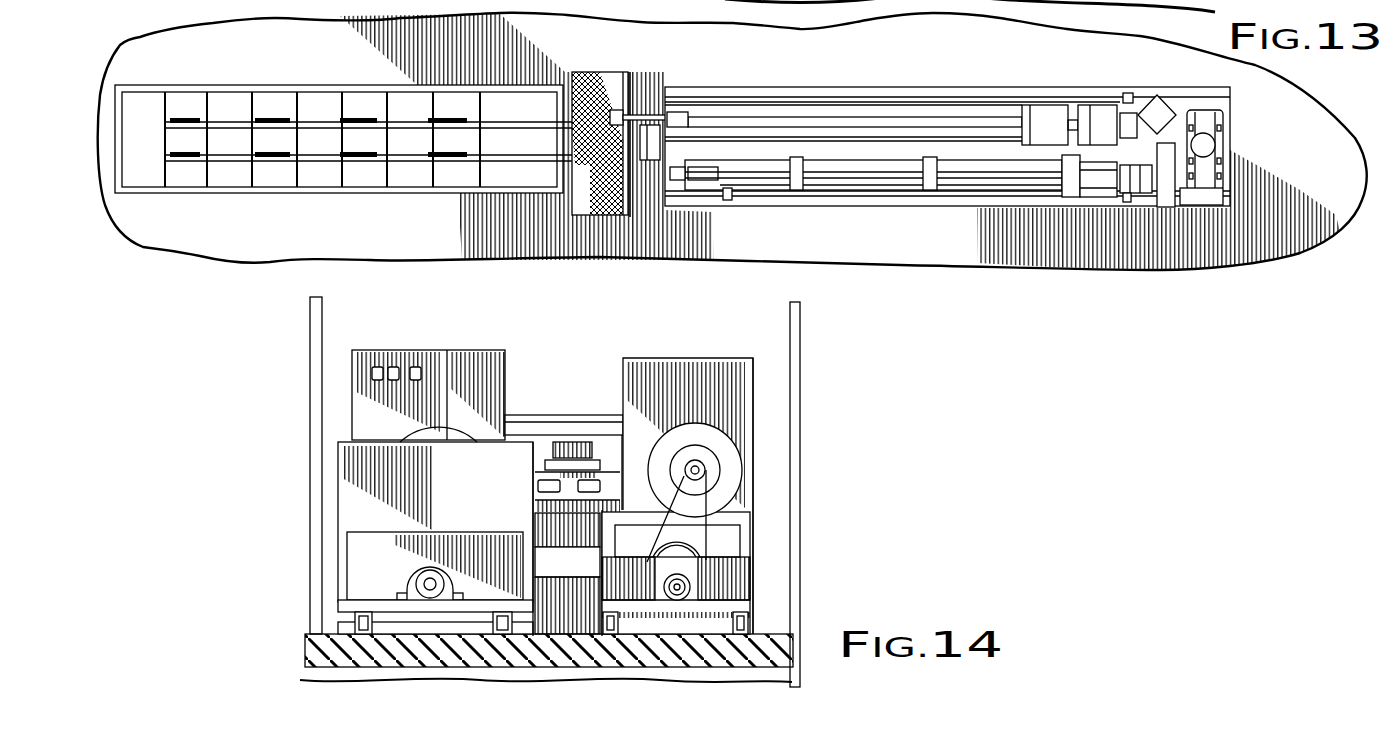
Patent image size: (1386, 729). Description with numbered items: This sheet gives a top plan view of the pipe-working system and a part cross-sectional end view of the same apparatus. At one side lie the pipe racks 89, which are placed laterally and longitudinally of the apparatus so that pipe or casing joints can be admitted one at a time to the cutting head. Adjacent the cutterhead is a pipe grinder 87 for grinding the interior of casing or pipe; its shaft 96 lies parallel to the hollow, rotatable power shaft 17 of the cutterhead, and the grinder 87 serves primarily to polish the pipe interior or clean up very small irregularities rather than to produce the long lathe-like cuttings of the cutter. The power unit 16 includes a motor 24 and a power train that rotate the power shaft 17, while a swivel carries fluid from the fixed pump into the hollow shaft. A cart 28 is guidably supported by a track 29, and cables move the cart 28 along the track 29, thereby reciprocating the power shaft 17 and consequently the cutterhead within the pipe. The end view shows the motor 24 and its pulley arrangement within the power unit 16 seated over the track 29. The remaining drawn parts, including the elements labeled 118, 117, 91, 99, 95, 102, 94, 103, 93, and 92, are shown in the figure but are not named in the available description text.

In FIG. 13, the pipe racks 89 is at (386, 78).
In FIG. 13, the pipe grinder 87 is at (600, 72).
In FIG. 13, the coupling 118 is at (614, 102).
In FIG. 13, the bracket 117 is at (641, 108).
In FIG. 13, the guide rail 91 is at (788, 88).
In FIG. 13, the grinder shaft 96 is at (850, 118).
In FIG. 14, the grinder shaft 96 is at (445, 575).
In FIG. 13, the motor 99 is at (1053, 108).
In FIG. 13, the gear box 95 is at (1118, 112).
In FIG. 14, the gear box 95 is at (447, 437).
In FIG. 13, the control box 102 is at (1150, 110).
In FIG. 14, the control box 102 is at (418, 322).
In FIG. 13, the carriage 94 is at (1242, 140).
In FIG. 14, the carriage 94 is at (603, 408).
In FIG. 13, the housing 103 is at (1170, 200).
In FIG. 14, the housing 103 is at (730, 358).
In FIG. 13, the power unit 16 is at (1150, 204).
In FIG. 14, the power unit 16 is at (762, 499).
In FIG. 13, the power shaft 17 is at (693, 182).
In FIG. 13, the lower rail 93 is at (747, 190).
In FIG. 13, the track 29 is at (806, 190).
In FIG. 14, the track 29 is at (750, 584).
In FIG. 13, the lead screw 92 is at (890, 196).
In FIG. 13, the cart 28 is at (948, 192).
In FIG. 14, the motor 24 is at (751, 457).